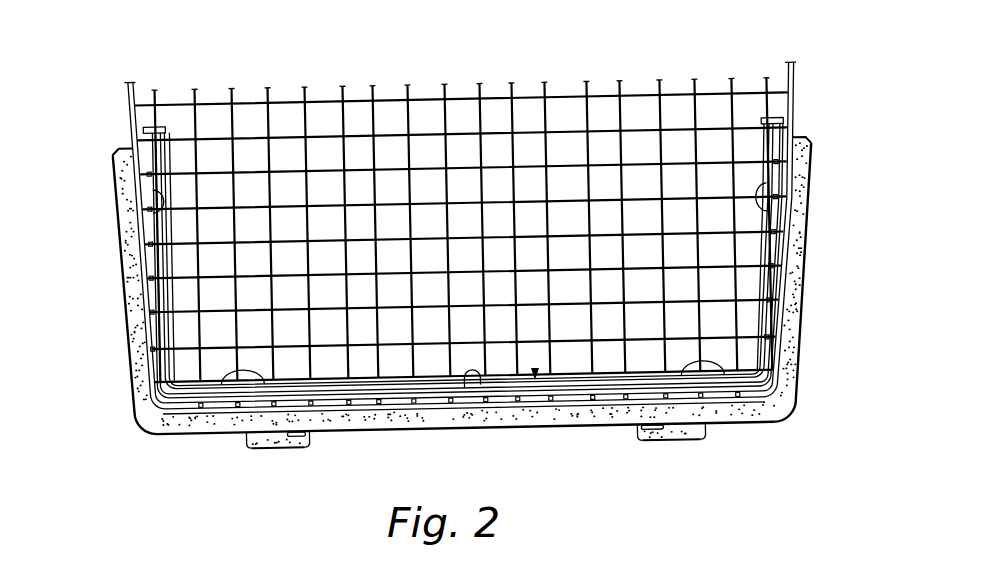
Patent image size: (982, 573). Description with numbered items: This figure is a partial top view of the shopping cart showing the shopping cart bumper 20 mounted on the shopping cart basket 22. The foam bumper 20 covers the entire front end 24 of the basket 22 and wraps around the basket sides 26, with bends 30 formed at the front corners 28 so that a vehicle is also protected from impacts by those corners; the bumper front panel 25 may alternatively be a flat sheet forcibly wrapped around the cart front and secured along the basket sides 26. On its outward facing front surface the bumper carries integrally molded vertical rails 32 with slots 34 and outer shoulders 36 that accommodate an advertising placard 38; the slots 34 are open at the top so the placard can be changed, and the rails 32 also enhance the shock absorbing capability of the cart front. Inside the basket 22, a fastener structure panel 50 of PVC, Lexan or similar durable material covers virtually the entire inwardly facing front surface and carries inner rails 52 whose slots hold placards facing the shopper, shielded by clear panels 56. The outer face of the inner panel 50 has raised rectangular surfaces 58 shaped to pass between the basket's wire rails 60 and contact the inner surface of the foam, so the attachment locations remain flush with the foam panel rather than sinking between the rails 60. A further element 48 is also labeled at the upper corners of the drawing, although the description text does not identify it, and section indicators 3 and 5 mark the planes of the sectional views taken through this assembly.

The shopping cart bumper 20 is at (775, 423).
The shopping cart basket 22 is at (397, 93).
The front end 24 is at (393, 410).
The bumper front panel 25 is at (510, 416).
The basket sides 26 is at (140, 262).
The front corners 28 is at (150, 408).
The bends 30 is at (147, 430).
The vertical rails 32 is at (257, 438).
The slots 34 is at (304, 436).
The outer shoulders 36 is at (290, 442).
The advertising placard 38 is at (425, 436).
The corner block 48 is at (118, 148).
The fastener structure panel 50 is at (535, 368).
The inner rails 52 is at (163, 137).
The clear panels 56 is at (157, 214).
The raised rectangular surfaces 58 is at (147, 156).
The wire rails 60 is at (147, 293).
The section line 3- 3 is at (262, 377).
The section line 5- 5 is at (867, 60).